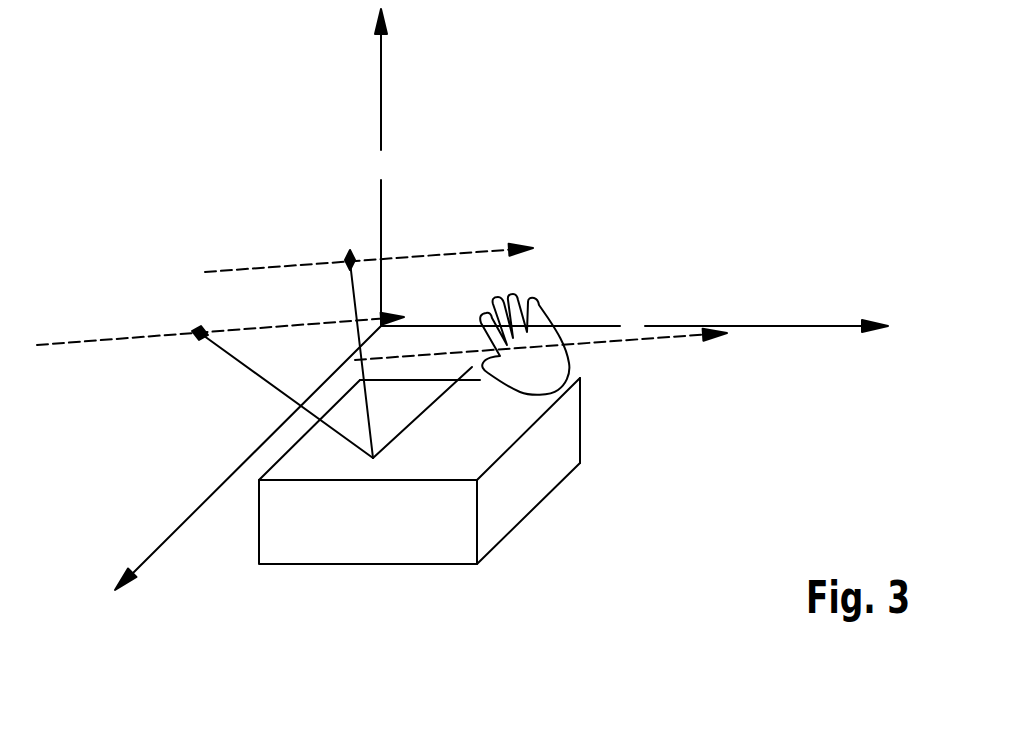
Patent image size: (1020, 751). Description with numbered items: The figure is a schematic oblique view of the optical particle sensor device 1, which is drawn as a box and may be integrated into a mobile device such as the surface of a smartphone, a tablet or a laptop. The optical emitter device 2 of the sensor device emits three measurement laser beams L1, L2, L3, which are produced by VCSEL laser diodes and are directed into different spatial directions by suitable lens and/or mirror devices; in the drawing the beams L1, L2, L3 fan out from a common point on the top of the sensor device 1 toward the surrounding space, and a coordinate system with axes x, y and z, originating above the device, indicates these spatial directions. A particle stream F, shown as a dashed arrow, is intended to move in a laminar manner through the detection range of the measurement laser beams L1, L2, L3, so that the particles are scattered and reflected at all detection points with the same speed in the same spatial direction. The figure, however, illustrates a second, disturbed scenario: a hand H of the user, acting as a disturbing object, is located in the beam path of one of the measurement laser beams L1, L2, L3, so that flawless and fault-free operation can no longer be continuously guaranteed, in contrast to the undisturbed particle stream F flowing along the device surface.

The optical particle sensor device 1 is at (507, 508).
The optical emitter device 2 is at (373, 458).
The hand H is at (543, 362).
The measurement laser beam L1 is at (427, 410).
The measurement laser beam L2 is at (252, 377).
The measurement laser beam L3 is at (355, 312).
The particle stream F is at (458, 253).
The x axis x is at (634, 324).
The y axis y is at (381, 167).
The z axis z is at (248, 458).